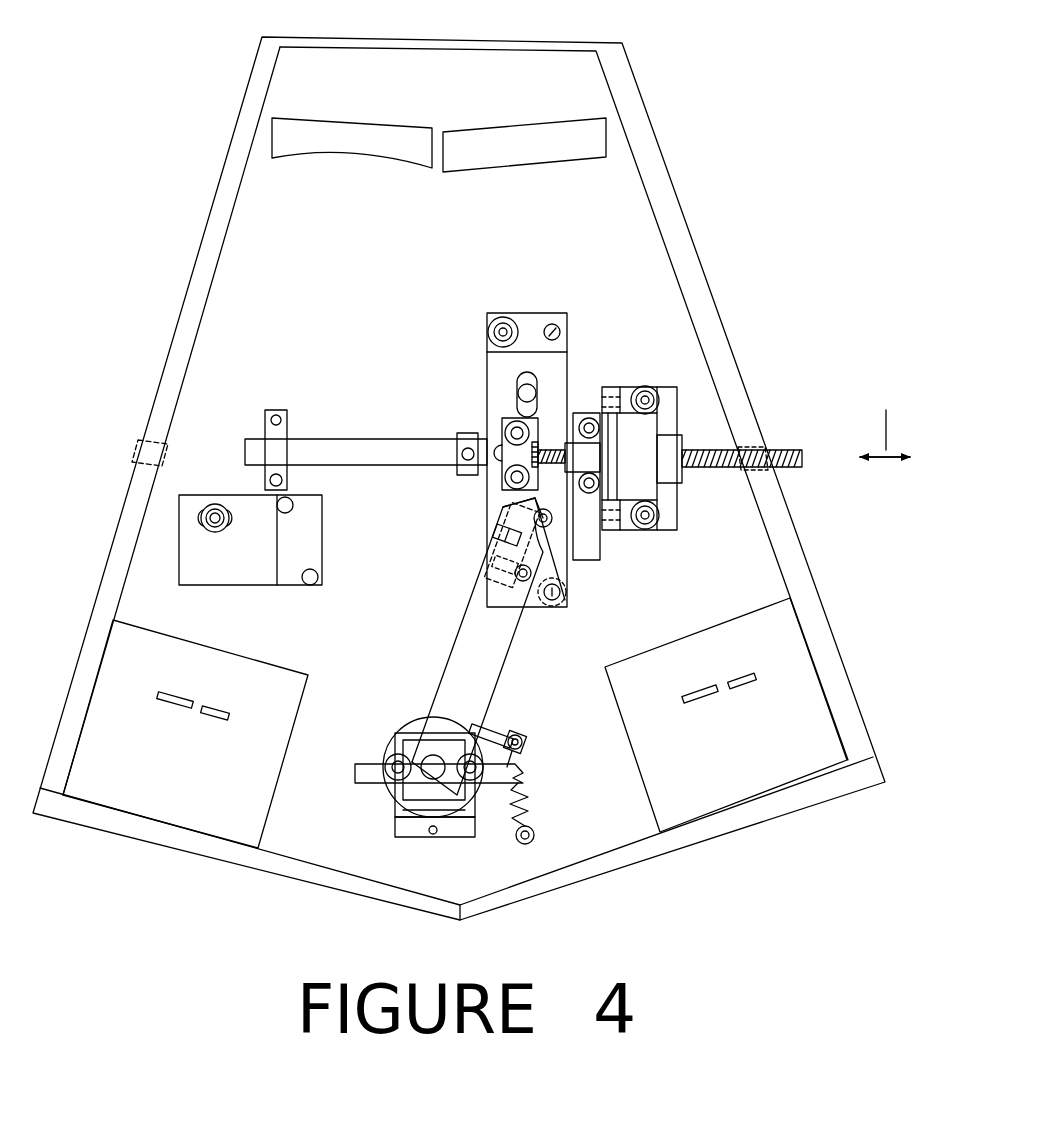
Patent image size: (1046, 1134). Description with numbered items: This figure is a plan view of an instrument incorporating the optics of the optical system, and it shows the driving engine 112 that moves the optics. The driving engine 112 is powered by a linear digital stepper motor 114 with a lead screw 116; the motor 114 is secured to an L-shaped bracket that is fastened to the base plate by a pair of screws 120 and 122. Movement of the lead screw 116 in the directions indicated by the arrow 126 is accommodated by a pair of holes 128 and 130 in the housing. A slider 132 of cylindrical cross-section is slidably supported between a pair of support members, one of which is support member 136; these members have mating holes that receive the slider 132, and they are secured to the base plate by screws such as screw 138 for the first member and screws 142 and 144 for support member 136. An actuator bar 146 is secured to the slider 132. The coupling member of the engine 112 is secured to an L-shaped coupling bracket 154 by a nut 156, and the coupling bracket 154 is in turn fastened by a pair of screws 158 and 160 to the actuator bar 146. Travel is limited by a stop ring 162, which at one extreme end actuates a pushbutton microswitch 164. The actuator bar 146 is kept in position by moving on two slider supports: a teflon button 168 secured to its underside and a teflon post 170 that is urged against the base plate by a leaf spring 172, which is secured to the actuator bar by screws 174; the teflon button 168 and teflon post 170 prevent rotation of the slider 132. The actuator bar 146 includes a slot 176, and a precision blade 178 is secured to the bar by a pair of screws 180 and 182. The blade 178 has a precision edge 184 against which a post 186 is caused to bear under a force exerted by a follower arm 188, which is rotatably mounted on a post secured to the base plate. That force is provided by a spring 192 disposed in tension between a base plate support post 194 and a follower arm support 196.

The driving engine 112 is at (403, 350).
The linear digital stepper motor 114 is at (662, 388).
The lead screw 116 is at (776, 449).
The screw 120 is at (637, 390).
The screw 122 is at (645, 530).
The arrow 126 is at (885, 421).
The hole 128 is at (150, 450).
The hole 130 is at (770, 472).
The slider 132 is at (312, 438).
The support member 136 is at (280, 416).
The screw 138 is at (283, 482).
The screw 142 is at (589, 418).
The screw 144 is at (589, 553).
The actuator bar 146 is at (512, 312).
The coupling bracket 154 is at (503, 440).
The nut 156 is at (510, 420).
The screw 158 is at (503, 455).
The screw 160 is at (512, 484).
The stop ring 162 is at (460, 476).
The pushbutton microswitch 164 is at (326, 512).
The teflon button 168 is at (562, 604).
The teflon post 170 is at (556, 328).
The leaf spring 172 is at (522, 330).
The screws 174 is at (493, 324).
The slot 176 is at (490, 527).
The precision blade 178 is at (545, 530).
The screw 180 is at (510, 590).
The screw 182 is at (558, 598).
The precision edge 184 is at (500, 566).
The post 186 is at (493, 540).
The follower arm 188 is at (462, 640).
The spring 192 is at (523, 808).
The base plate support post 194 is at (534, 836).
The follower arm support 196 is at (512, 738).